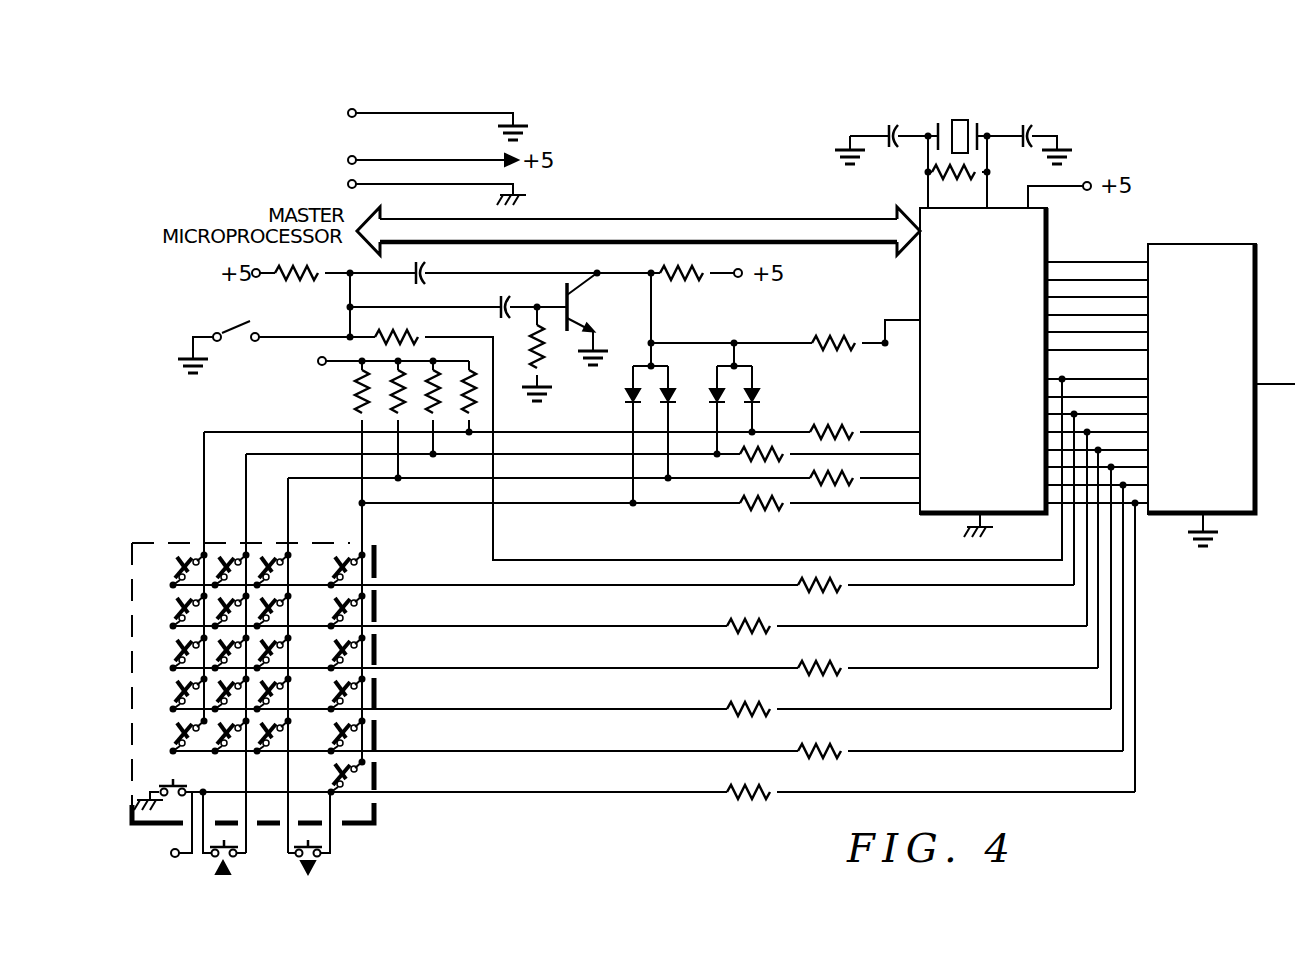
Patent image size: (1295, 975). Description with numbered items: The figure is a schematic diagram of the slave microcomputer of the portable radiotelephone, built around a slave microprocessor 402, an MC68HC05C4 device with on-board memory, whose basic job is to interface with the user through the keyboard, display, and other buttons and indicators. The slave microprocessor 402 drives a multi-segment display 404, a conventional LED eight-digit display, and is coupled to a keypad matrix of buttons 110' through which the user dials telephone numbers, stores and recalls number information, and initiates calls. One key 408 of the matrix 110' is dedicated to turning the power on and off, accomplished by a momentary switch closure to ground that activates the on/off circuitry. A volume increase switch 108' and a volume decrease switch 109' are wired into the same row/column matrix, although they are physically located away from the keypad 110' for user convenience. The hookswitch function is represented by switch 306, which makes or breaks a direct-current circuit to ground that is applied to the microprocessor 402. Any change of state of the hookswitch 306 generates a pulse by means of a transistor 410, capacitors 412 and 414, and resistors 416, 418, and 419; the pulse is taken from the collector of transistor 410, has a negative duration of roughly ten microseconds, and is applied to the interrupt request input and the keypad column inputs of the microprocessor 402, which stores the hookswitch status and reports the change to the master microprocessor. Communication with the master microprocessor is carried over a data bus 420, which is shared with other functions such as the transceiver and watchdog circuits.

The hookswitch (HKS) 306 is at (238, 324).
The resistor 419 is at (310, 282).
The capacitor 412 is at (410, 280).
The capacitor 414 is at (497, 311).
The transistor 410 is at (580, 310).
The resistor 416 is at (700, 286).
The resistor 418 is at (545, 350).
The data bus 420 is at (677, 218).
The slave microprocessor 402 is at (920, 284).
The multi-segment display 404 is at (1206, 244).
The keypad matrix 110' is at (253, 642).
The power on/off key 408 is at (181, 782).
The volume increase switch 108' is at (250, 842).
The volume decrease switch 109' is at (336, 843).